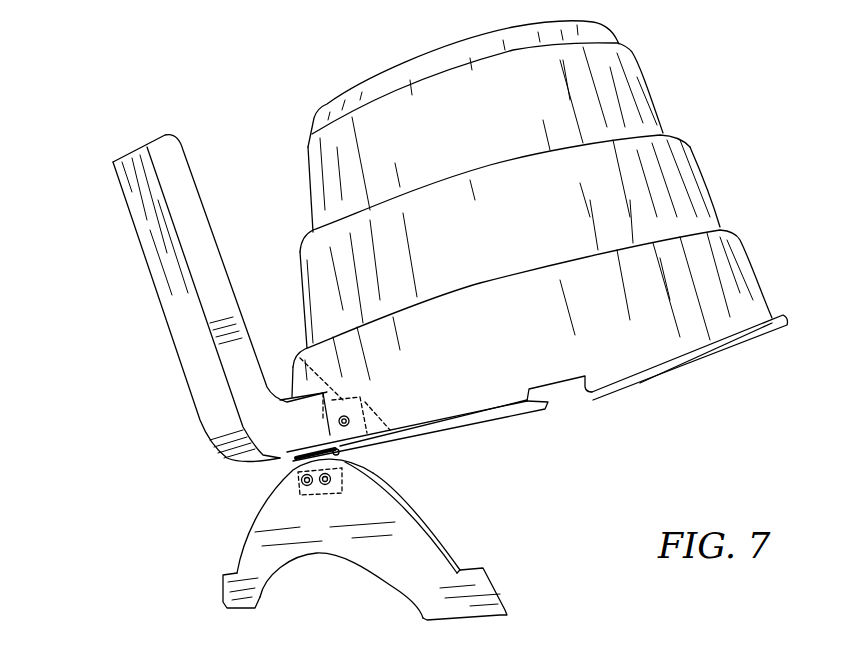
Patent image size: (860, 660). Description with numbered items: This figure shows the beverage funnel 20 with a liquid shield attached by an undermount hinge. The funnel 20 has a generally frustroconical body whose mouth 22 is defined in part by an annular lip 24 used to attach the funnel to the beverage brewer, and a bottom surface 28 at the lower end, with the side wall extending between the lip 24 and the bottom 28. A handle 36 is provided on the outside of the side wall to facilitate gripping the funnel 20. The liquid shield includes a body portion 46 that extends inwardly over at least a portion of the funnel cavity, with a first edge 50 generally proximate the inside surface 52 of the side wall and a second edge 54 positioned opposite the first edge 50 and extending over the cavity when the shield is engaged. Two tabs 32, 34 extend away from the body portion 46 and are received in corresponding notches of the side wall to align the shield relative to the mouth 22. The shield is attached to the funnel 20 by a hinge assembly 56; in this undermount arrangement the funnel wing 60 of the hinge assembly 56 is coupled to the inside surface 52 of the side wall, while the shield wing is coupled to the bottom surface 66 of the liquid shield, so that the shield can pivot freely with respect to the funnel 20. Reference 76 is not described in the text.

The beverage funnel 20 is at (103, 114).
The mouth 22 is at (560, 383).
The annular lip 24 is at (705, 367).
The bottom surface 28 is at (397, 62).
The tab 32 is at (225, 600).
The tab 34 is at (460, 608).
The handle 36 is at (167, 333).
The body portion 46 is at (260, 530).
The first edge 50 is at (372, 498).
The inside surface 52 is at (353, 463).
The second edge 54 is at (342, 558).
The hinge assembly 56 is at (278, 464).
The funnel wing 60 is at (297, 353).
The bottom surface 66 is at (422, 512).
The strip inner edge 76 is at (438, 540).